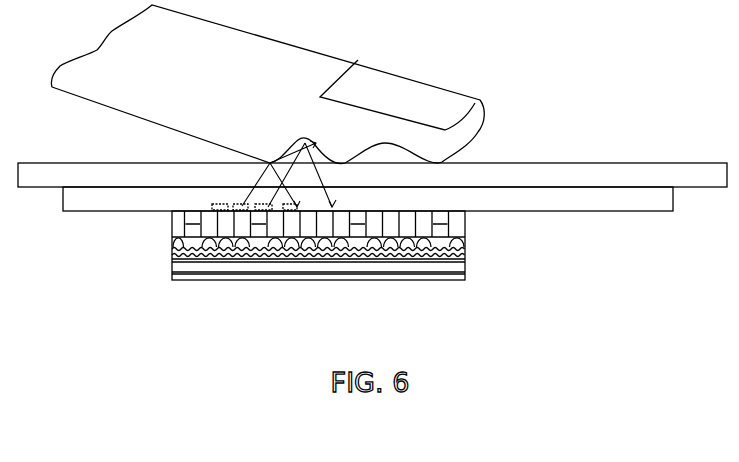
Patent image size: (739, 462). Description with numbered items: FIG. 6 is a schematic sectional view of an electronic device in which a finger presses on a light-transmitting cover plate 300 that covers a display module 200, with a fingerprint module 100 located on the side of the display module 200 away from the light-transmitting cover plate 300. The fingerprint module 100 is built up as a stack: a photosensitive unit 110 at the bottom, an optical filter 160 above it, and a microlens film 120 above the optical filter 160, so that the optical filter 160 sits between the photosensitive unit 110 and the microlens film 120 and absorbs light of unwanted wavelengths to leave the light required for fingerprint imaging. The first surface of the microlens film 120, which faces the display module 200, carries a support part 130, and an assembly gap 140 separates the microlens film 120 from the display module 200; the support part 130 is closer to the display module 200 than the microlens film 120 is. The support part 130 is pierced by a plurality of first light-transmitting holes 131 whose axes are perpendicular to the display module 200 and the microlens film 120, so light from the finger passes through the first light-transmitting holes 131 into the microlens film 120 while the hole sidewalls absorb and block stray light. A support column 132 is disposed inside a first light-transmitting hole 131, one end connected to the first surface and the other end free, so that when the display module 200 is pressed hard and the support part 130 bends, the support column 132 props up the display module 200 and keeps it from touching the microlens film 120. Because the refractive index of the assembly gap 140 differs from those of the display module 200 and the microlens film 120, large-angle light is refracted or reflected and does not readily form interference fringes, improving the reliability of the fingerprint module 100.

The fingerprint module 100 is at (356, 269).
The photosensitive unit 110 is at (370, 294).
The microlens film 120 is at (468, 249).
The support part 130 is at (320, 269).
The first light-transmitting hole 131 is at (173, 218).
The support column 132 is at (359, 237).
The assembly gap 140 is at (170, 232).
The optical filter 160 is at (467, 257).
The display module 200 is at (564, 196).
The light-transmitting cover plate 300 is at (624, 175).